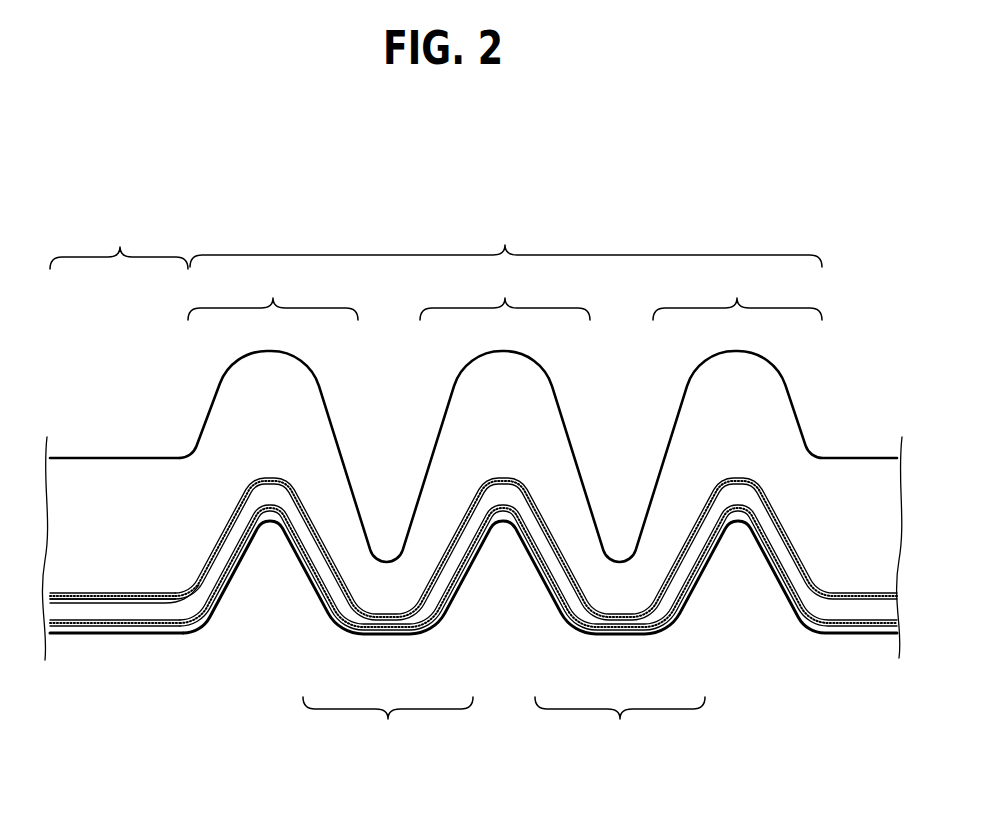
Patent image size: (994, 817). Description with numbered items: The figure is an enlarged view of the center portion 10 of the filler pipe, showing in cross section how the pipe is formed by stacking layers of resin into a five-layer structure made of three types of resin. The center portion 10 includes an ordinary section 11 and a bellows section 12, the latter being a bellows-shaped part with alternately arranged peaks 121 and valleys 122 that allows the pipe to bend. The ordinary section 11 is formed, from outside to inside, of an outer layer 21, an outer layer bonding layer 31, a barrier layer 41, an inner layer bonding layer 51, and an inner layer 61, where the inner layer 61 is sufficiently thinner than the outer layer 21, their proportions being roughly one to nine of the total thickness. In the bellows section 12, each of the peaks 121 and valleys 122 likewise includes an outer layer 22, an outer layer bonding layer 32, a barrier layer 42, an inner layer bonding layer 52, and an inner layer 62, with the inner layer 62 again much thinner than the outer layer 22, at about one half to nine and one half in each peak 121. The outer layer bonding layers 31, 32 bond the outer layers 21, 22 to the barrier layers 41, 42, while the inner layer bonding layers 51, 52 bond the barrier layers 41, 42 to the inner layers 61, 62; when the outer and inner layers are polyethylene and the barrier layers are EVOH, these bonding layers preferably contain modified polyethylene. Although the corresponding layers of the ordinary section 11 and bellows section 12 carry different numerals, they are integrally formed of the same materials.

The center portion 10 is at (823, 197).
The ordinary section 11 is at (119, 240).
The bellows section 12 is at (506, 241).
The peak 121 is at (505, 293).
The valley 122 is at (504, 725).
The outer layer 21 is at (111, 457).
The outer layer 22 is at (453, 380).
The outer layer bonding layer 31 is at (168, 603).
The outer layer bonding layer 32 is at (531, 482).
The barrier layer 41 is at (136, 608).
The barrier layer 42 is at (452, 562).
The inner layer bonding layer 51 is at (103, 628).
The inner layer bonding layer 52 is at (467, 557).
The inner layer 61 is at (70, 640).
The inner layer 62 is at (490, 532).